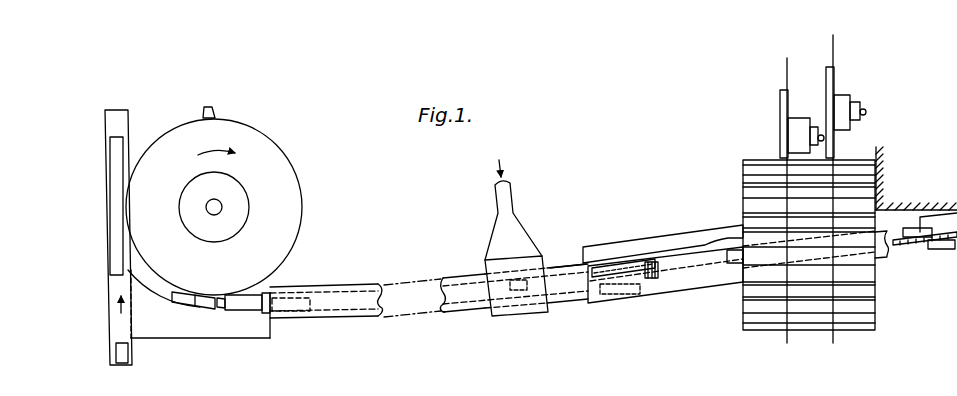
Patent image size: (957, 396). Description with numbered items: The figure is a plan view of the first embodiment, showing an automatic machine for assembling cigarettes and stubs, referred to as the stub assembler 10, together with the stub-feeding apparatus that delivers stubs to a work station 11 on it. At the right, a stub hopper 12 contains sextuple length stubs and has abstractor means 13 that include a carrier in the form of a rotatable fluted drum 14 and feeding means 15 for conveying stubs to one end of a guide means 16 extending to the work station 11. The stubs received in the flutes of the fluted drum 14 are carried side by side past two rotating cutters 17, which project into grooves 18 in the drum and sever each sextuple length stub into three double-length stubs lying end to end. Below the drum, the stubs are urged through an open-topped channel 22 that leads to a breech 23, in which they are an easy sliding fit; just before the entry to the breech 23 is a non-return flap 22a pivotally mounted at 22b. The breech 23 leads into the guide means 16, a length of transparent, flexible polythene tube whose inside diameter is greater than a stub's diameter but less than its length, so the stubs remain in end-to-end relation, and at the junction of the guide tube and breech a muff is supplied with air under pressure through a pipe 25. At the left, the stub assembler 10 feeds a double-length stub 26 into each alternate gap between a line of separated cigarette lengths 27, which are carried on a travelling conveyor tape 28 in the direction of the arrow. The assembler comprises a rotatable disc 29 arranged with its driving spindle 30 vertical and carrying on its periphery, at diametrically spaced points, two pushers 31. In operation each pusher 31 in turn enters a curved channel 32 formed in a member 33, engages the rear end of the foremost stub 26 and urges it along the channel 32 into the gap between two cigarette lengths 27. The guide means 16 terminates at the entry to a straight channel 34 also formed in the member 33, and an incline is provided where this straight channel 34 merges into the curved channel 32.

The stub assembler 10 is at (288, 142).
The work station 11 is at (273, 289).
The stub hopper 12 is at (886, 153).
The abstractor means 13 is at (735, 319).
The rotatable fluted drum 14 is at (807, 331).
The feeding means 15 is at (668, 229).
The guide means 16 is at (356, 285).
The rotating cutters 17 is at (828, 50).
The grooves 18 is at (787, 332).
The open-topped channel 22 is at (690, 270).
The non-return flap 22a is at (608, 270).
The pivot mounting 22b is at (649, 279).
The breech 23 is at (562, 267).
The pipe 25 is at (504, 202).
The double-length stub 26 is at (181, 300).
The cigarette lengths 27 is at (118, 203).
The travelling conveyor tape 28 is at (117, 290).
The rotatable disc 29 is at (290, 193).
The driving spindle 30 is at (212, 210).
The pushers 31 is at (216, 110).
The curved channel 32 is at (163, 290).
The member 33 is at (210, 330).
The straight channel 34 is at (264, 313).